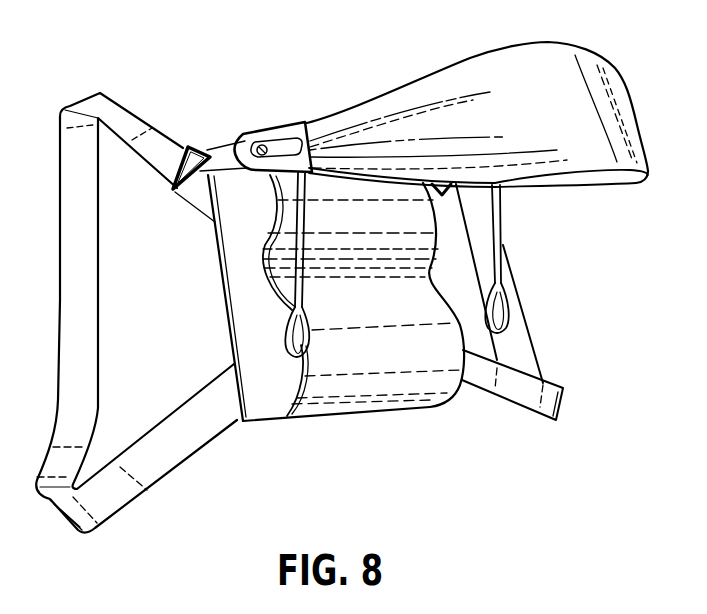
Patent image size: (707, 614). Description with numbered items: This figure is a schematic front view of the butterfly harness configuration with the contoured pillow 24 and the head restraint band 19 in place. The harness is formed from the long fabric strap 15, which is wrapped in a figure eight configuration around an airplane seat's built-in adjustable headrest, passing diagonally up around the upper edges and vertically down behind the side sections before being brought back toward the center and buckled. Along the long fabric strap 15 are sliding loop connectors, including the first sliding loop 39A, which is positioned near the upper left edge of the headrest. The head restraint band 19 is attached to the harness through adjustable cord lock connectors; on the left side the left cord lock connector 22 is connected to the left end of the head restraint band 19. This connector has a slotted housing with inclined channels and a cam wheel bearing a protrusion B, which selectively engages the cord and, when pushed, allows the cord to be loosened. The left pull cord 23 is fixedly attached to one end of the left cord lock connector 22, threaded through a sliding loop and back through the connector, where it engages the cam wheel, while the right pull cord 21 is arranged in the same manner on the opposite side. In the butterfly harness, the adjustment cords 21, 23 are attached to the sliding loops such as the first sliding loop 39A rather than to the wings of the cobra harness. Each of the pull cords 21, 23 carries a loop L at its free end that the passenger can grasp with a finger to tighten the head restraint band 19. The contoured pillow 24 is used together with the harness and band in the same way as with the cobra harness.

The long fabric strap 15 is at (187, 448).
The head restraint band 19 is at (523, 67).
The right pull cord 21 is at (510, 263).
The left cord lock connector 22 is at (292, 122).
The left pull cord 23 is at (303, 213).
The contoured pillow 24 is at (393, 378).
The first sliding loop 39A is at (195, 147).
The protrusion B is at (260, 144).
The loop L is at (310, 315).